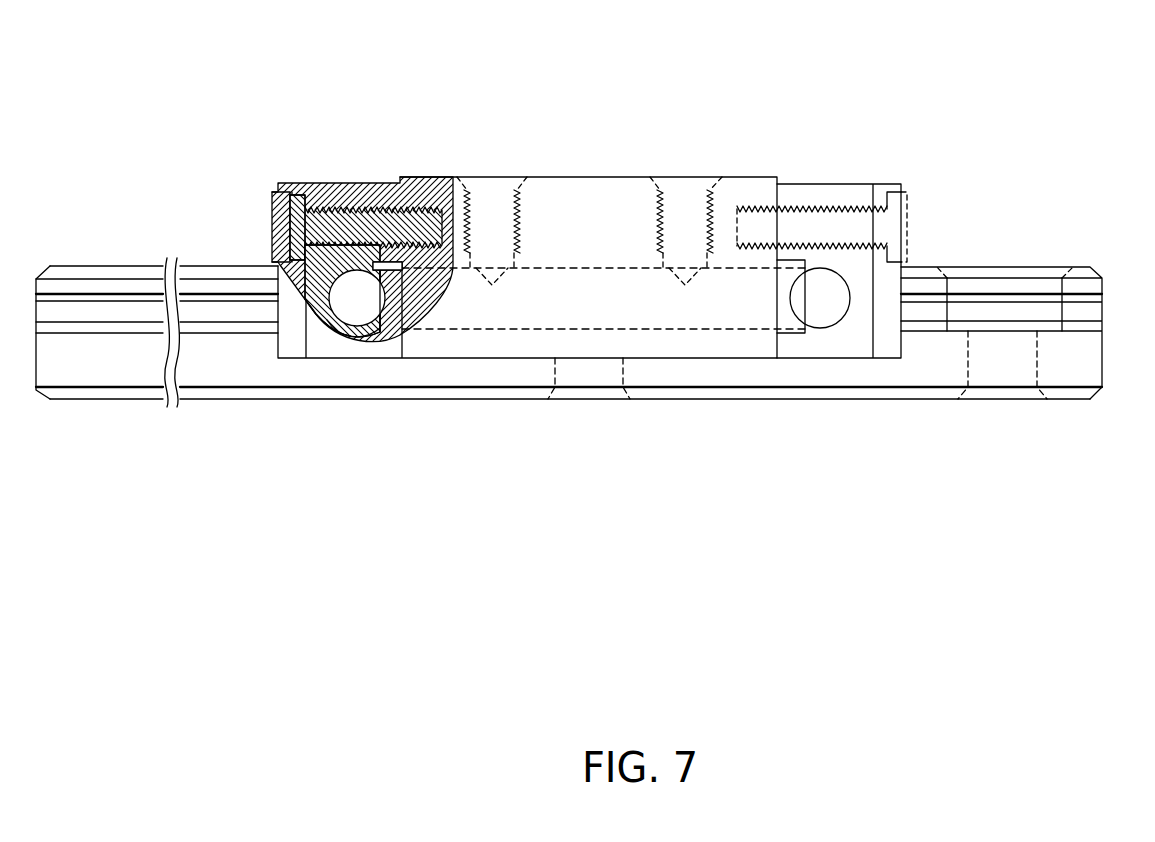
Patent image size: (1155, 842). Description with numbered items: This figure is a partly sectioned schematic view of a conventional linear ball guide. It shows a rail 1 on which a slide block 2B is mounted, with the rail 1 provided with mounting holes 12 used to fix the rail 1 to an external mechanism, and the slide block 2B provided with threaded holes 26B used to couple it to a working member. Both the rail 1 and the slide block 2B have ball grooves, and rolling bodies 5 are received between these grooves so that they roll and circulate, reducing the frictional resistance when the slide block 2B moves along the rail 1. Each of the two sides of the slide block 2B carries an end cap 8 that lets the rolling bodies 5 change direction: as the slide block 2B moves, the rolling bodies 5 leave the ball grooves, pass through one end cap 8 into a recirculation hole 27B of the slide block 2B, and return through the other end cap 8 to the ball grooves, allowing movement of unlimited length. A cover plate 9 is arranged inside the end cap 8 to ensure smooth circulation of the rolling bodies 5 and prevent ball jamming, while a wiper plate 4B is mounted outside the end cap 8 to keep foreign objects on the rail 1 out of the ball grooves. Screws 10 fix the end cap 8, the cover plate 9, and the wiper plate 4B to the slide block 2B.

The rail 1 is at (1082, 287).
The mounting holes 12 is at (995, 287).
The slide block 2B is at (577, 223).
The threaded holes 26B is at (683, 210).
The recirculation hole 27B is at (502, 308).
The screws 10 is at (273, 220).
The end caps 8 is at (370, 202).
The cover plates 9 is at (395, 330).
The wiper plates 4B is at (884, 340).
The rolling bodies 5 is at (832, 290).